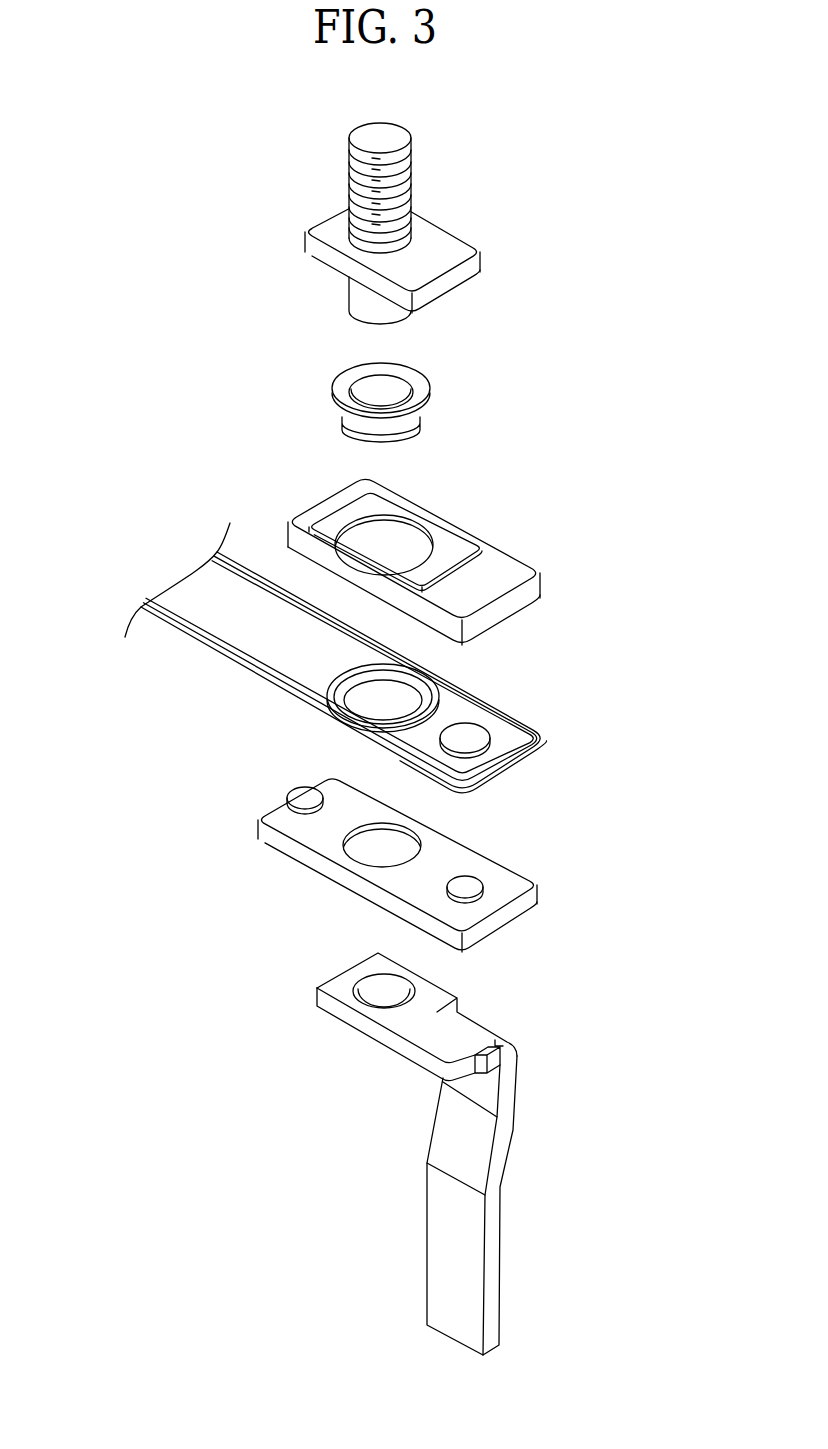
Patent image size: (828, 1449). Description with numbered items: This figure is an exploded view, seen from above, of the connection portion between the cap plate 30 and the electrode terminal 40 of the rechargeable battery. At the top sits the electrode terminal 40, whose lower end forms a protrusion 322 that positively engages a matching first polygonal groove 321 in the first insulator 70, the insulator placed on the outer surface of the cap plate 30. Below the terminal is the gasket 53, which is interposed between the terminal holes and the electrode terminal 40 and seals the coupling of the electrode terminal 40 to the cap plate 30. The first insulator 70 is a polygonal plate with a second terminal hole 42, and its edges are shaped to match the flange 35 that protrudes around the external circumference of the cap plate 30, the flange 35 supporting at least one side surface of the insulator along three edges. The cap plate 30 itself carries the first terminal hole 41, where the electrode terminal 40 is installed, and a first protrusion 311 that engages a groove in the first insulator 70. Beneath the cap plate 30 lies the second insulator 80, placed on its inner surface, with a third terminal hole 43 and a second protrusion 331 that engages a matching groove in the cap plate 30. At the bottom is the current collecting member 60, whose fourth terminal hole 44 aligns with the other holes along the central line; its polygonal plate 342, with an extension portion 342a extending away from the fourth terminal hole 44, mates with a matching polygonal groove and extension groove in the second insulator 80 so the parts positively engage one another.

The electrode terminal 40 is at (395, 175).
The protrusion 322 is at (443, 253).
The gasket 53 is at (432, 392).
The second terminal hole 42 is at (357, 528).
The first polygonal groove 321 is at (452, 557).
The first insulator 70 is at (520, 605).
The cap plate 30 is at (195, 593).
The flange 35 is at (180, 632).
The first terminal hole 41 is at (355, 688).
The first protrusion 311 is at (465, 740).
The second insulator 80 is at (510, 888).
The second protrusion 331 is at (467, 885).
The third terminal hole 43 is at (372, 850).
The fourth terminal hole 44 is at (370, 988).
The polygonal plate 342 is at (380, 1032).
The extension portion 342a is at (497, 1057).
The current collecting member 60 is at (443, 1145).